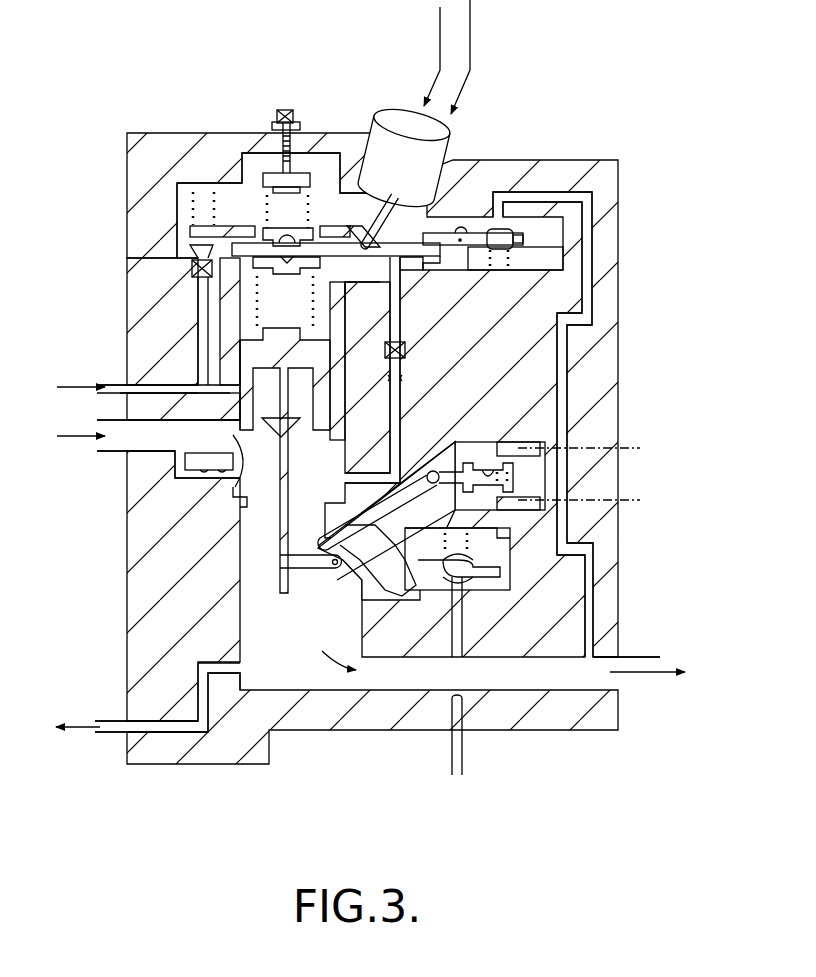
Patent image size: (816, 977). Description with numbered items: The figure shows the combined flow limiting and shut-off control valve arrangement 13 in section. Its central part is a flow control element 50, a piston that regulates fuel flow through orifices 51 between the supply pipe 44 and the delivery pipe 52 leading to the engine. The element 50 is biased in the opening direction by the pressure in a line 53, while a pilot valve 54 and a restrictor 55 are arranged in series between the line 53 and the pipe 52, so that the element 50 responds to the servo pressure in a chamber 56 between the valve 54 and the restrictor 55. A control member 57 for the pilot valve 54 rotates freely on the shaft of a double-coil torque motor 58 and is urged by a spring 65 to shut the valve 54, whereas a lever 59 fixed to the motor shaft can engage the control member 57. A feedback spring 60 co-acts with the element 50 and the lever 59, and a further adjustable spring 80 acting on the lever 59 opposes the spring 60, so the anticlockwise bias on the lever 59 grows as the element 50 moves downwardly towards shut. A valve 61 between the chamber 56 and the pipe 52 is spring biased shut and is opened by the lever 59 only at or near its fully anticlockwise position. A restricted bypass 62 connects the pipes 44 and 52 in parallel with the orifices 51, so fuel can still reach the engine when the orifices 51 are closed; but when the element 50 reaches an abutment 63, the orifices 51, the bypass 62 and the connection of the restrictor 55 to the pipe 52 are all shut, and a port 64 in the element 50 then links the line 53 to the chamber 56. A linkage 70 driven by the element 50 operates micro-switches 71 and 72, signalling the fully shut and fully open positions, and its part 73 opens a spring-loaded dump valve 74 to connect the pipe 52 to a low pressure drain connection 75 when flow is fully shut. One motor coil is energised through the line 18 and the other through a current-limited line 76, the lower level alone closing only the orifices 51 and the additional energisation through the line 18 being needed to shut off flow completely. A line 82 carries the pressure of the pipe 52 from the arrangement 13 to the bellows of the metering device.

The valve arrangement 13 is at (232, 775).
The line 18 is at (440, 33).
The pipe 44 is at (123, 449).
The flow control element 50 is at (273, 357).
The orifices 51 is at (243, 470).
The delivery pipe 52 is at (643, 665).
The line 53 is at (120, 392).
The pilot valve 54 is at (190, 245).
The restrictor 55 is at (400, 376).
The chamber 56 is at (318, 172).
The control member 57 is at (235, 226).
The double-coil torque motor 58 is at (428, 153).
The lever 59 is at (423, 252).
The feedback spring 60 is at (257, 300).
The valve 61 is at (500, 238).
The restricted bypass 62 is at (185, 473).
The abutment 63 is at (242, 500).
The port 64 is at (212, 338).
The spring 65 is at (214, 197).
The linkage 70 is at (322, 566).
The micro-switch 71 is at (512, 448).
The micro-switch 72 is at (520, 505).
The part 73 is at (405, 573).
The spring-loaded dump valve 74 is at (465, 575).
The low pressure drain connection 75 is at (457, 738).
The line 76 is at (472, 48).
The adjustable spring 80 is at (266, 195).
The line 82 is at (125, 727).